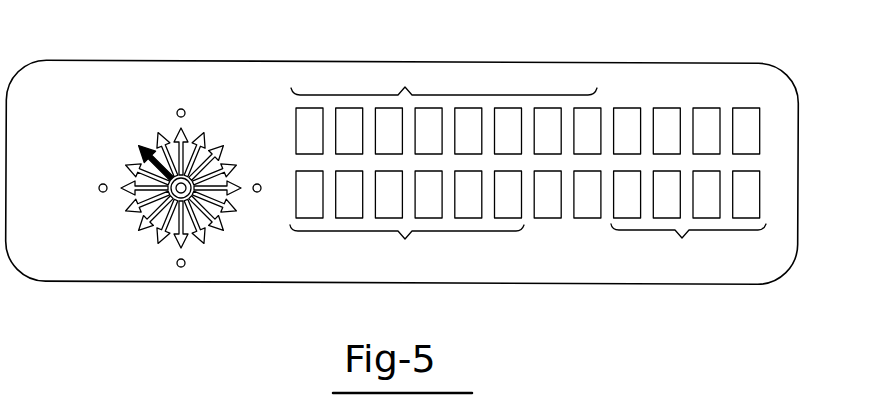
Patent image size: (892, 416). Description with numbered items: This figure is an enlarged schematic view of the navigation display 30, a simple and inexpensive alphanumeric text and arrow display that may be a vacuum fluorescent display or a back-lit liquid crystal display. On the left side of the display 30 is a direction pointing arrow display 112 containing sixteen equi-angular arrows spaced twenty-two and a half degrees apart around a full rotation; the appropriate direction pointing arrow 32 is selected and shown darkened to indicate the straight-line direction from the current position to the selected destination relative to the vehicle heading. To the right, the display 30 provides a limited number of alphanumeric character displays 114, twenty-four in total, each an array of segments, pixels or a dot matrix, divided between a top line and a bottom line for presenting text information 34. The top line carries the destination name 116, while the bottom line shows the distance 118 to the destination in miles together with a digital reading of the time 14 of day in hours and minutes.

The time 14 is at (682, 246).
The display 30 is at (86, 86).
The direction pointing arrow 32 is at (144, 142).
The text information 34 is at (528, 173).
The direction pointing arrow display 112 is at (180, 183).
The alphanumeric character displays 114 is at (743, 118).
The destination name 116 is at (525, 81).
The distance 118 is at (405, 241).